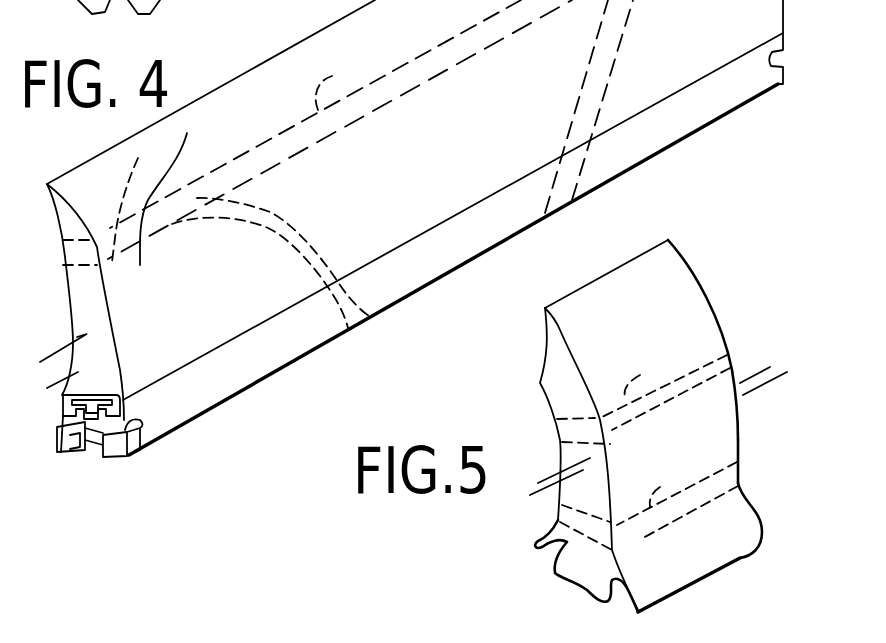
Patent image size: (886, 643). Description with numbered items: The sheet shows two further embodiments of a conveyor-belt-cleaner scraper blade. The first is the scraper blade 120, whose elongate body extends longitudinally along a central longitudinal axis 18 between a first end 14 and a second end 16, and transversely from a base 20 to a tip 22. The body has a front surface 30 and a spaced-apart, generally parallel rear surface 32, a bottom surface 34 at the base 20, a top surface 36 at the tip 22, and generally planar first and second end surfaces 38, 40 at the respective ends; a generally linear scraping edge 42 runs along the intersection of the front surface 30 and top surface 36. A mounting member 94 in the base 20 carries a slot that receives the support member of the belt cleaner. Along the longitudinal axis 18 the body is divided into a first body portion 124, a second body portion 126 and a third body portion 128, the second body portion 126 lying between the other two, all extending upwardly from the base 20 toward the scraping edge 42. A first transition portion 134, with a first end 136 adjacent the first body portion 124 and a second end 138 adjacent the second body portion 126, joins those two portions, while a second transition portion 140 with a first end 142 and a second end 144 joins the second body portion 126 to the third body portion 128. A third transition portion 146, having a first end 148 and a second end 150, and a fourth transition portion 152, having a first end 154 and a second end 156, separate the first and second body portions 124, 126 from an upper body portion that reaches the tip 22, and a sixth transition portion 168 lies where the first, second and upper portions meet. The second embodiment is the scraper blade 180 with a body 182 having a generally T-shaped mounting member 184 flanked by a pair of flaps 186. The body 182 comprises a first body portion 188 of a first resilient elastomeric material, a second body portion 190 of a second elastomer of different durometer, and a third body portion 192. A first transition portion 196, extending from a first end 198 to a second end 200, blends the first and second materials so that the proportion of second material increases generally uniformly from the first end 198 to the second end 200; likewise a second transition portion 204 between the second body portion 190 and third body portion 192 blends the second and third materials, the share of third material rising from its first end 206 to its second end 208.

In FIG. 4, the first end 14 is at (77, 283).
In FIG. 5, the first end 14 is at (563, 387).
In FIG. 5, the second end 16 is at (693, 263).
In FIG. 4, the central longitudinal axis 18 is at (67, 350).
In FIG. 5, the central longitudinal axis 18 is at (767, 387).
In FIG. 4, the base 20 is at (272, 368).
In FIG. 5, the base 20 is at (750, 495).
In FIG. 5, the tip 22 is at (572, 320).
In FIG. 4, the front surface 30 is at (105, 173).
In FIG. 5, the front surface 30 is at (730, 440).
In FIG. 4, the rear surface 32 is at (63, 362).
In FIG. 5, the rear surface 32 is at (563, 453).
In FIG. 4, the bottom surface 34 is at (63, 443).
In FIG. 4, the top surface 36 is at (58, 220).
In FIG. 5, the top surface 36 is at (547, 357).
In FIG. 4, the first end surface 38 is at (97, 302).
In FIG. 5, the first end surface 38 is at (555, 500).
In FIG. 5, the second end surface 40 is at (738, 387).
In FIG. 4, the scraping edge 42 is at (303, 42).
In FIG. 5, the scraping edge 42 is at (633, 258).
In FIG. 4, the mounting member 94 is at (78, 452).
In FIG. 4, the scraper blade 120 is at (181, 455).
In FIG. 4, the first body portion 124 is at (50, 393).
In FIG. 4, the second body portion 126 is at (423, 222).
In FIG. 4, the third body portion 128 is at (747, 25).
In FIG. 4, the first transition portion 134 is at (320, 250).
In FIG. 4, the first end 136 is at (292, 245).
In FIG. 4, the second end 138 is at (305, 230).
In FIG. 4, the second transition portion 140 is at (590, 87).
In FIG. 4, the first end 142 is at (588, 50).
In FIG. 4, the second end 144 is at (620, 43).
In FIG. 4, the third transition portion 146 is at (177, 188).
In FIG. 4, the first end 148 is at (137, 258).
In FIG. 4, the second end 150 is at (142, 199).
In FIG. 4, the fourth transition portion 152 is at (380, 90).
In FIG. 4, the first end 154 is at (325, 140).
In FIG. 4, the second end 156 is at (344, 83).
In FIG. 4, the sixth transition portion 168 is at (182, 212).
In FIG. 5, the scraper blade 180 is at (736, 251).
In FIG. 5, the body 182 is at (723, 307).
In FIG. 5, the T-shaped mounting member 184 is at (563, 577).
In FIG. 5, the flaps 186 is at (532, 543).
In FIG. 5, the first body portion 188 is at (715, 553).
In FIG. 5, the second body portion 190 is at (740, 417).
In FIG. 5, the third body portion 192 is at (687, 300).
In FIG. 5, the first transition portion 196 is at (730, 473).
In FIG. 5, the first end 198 is at (642, 535).
In FIG. 5, the second end 200 is at (649, 503).
In FIG. 5, the second transition portion 204 is at (735, 360).
In FIG. 5, the first end 206 is at (623, 430).
In FIG. 5, the second end 208 is at (643, 394).